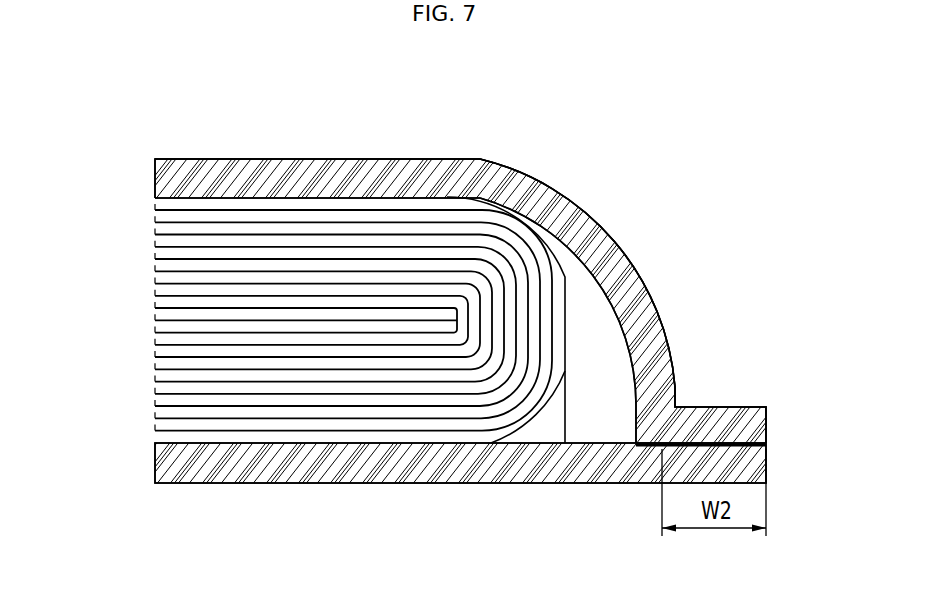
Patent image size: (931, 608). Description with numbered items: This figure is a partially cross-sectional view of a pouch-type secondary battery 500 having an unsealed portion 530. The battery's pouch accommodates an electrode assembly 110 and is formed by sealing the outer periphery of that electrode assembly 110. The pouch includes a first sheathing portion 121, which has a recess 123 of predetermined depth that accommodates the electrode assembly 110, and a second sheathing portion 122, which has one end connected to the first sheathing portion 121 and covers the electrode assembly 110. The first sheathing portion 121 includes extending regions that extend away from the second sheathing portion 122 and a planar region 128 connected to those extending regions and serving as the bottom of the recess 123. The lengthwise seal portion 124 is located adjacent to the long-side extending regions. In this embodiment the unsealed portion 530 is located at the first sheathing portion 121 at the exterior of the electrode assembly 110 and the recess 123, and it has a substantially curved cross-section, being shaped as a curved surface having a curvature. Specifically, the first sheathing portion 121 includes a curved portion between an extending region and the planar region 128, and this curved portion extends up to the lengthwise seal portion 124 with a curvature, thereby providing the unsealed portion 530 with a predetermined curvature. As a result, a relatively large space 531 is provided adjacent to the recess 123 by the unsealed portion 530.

The secondary battery 500 is at (750, 86).
The first sheathing portion 121 is at (143, 146).
The planar region 128 is at (326, 170).
The unsealed portion 530 is at (662, 242).
The space 531 is at (607, 367).
The electrode assembly 110 is at (127, 311).
The second sheathing portion 122 is at (370, 465).
The recess 123 is at (552, 423).
The lengthwise seal portion 124 is at (766, 444).